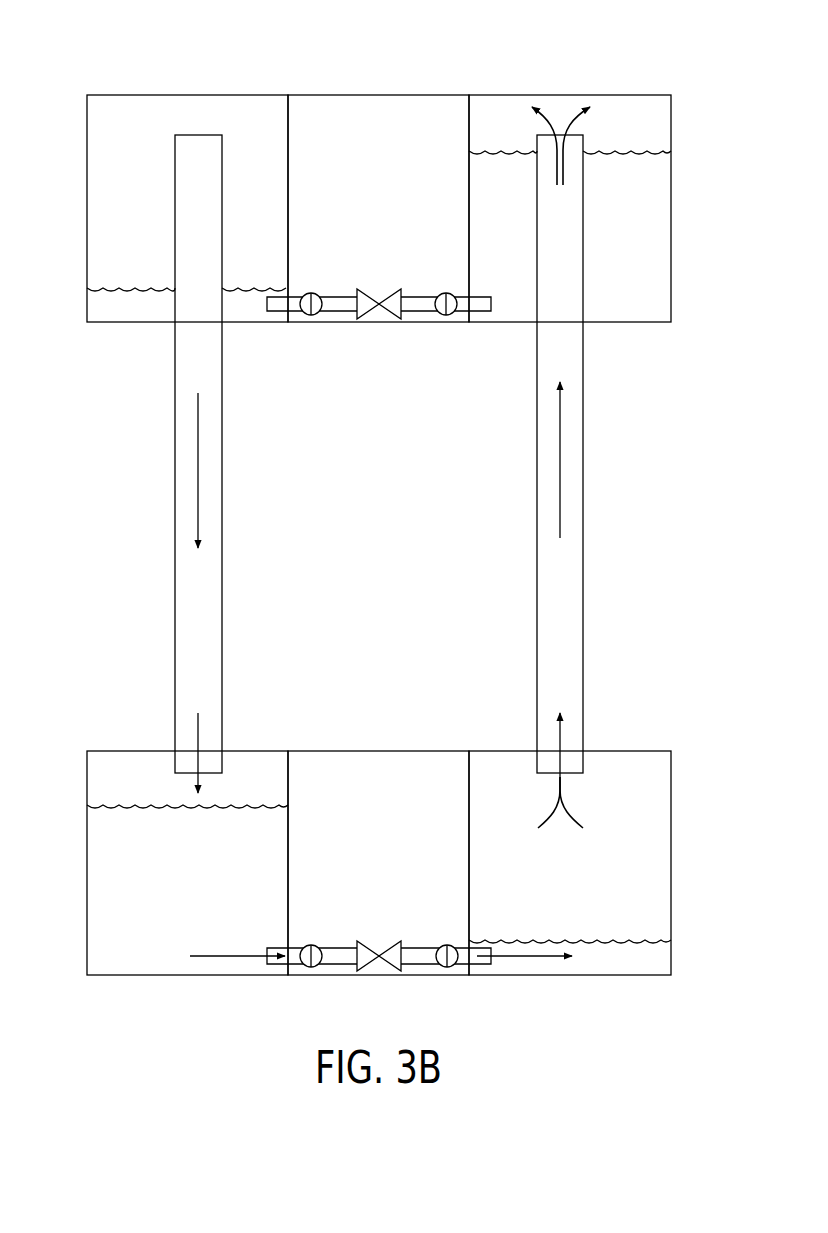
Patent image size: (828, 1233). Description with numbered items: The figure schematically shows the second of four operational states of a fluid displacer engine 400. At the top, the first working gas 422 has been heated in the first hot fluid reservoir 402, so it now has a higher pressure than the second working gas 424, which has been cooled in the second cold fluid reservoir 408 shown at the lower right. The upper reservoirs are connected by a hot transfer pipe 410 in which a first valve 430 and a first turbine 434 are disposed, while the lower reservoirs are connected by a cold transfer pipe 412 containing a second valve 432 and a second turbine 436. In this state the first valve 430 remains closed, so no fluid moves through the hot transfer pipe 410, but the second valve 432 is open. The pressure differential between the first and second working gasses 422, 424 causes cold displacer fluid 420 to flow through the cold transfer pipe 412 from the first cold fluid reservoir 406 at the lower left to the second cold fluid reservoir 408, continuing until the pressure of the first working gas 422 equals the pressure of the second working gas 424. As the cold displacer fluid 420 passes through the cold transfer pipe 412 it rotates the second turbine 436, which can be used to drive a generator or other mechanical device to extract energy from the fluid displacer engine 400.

The fluid displacer engine 400 is at (89, 39).
The first hot fluid reservoir 402 is at (99, 212).
The first working gas 422 is at (277, 212).
The hot transfer pipe 410 is at (379, 329).
The first valve 430 is at (305, 316).
The first turbine 434 is at (390, 318).
The cold displacer fluid 420 is at (99, 896).
The first cold fluid reservoir 406 is at (279, 864).
The second working gas 424 is at (663, 848).
The second cold fluid reservoir 408 is at (663, 878).
The cold transfer pipe 412 is at (381, 982).
The second valve 432 is at (307, 968).
The second turbine 436 is at (391, 970).